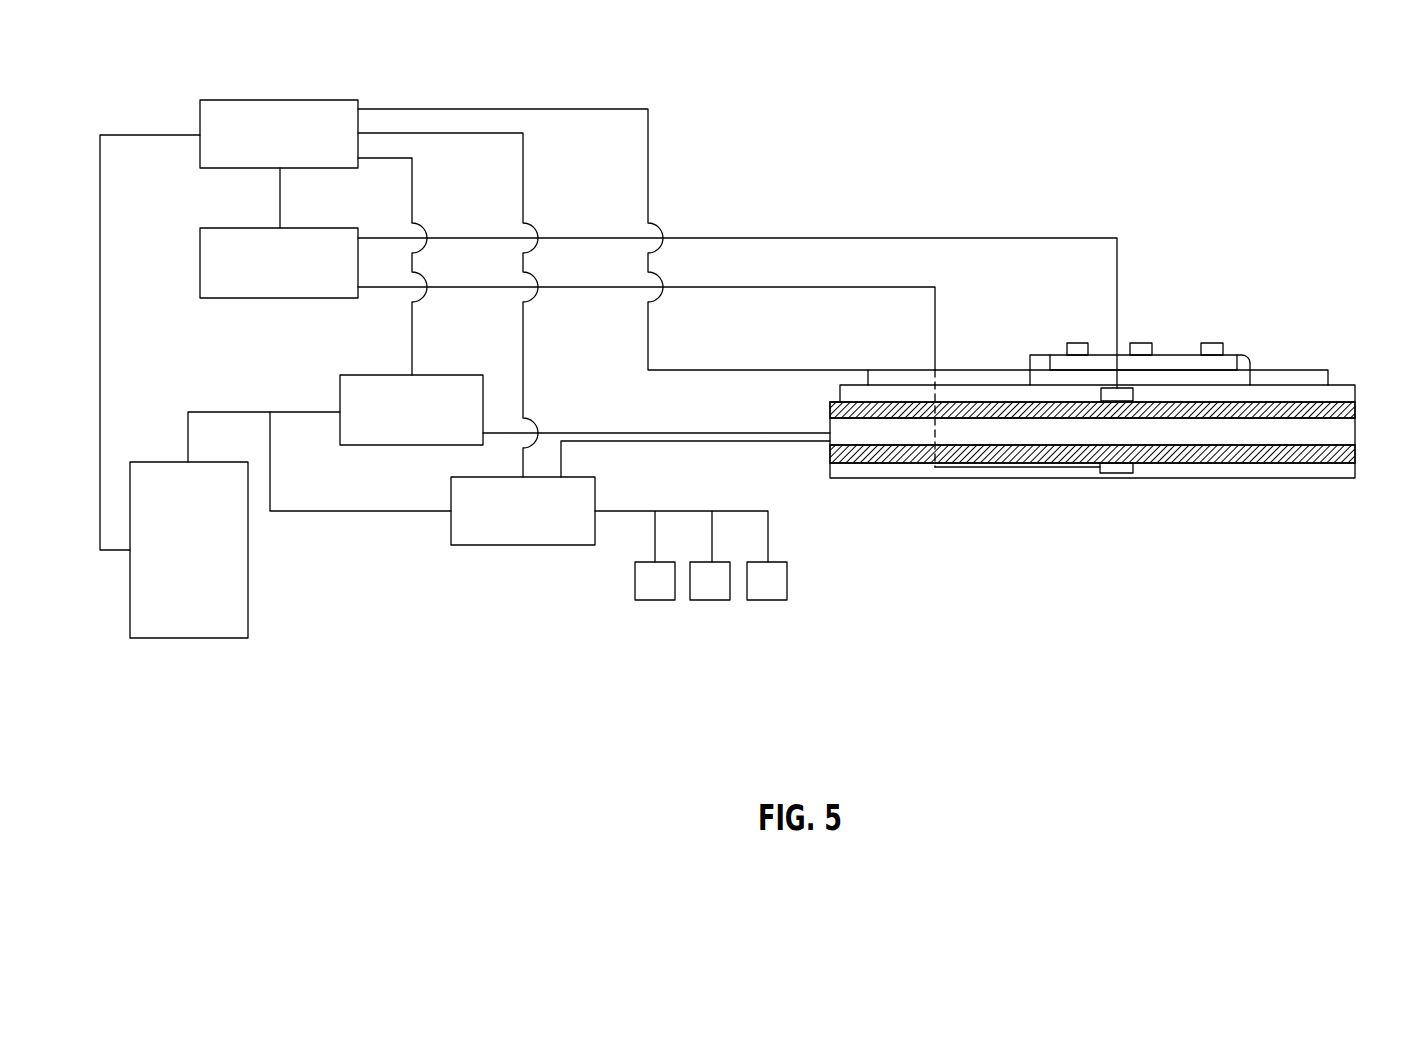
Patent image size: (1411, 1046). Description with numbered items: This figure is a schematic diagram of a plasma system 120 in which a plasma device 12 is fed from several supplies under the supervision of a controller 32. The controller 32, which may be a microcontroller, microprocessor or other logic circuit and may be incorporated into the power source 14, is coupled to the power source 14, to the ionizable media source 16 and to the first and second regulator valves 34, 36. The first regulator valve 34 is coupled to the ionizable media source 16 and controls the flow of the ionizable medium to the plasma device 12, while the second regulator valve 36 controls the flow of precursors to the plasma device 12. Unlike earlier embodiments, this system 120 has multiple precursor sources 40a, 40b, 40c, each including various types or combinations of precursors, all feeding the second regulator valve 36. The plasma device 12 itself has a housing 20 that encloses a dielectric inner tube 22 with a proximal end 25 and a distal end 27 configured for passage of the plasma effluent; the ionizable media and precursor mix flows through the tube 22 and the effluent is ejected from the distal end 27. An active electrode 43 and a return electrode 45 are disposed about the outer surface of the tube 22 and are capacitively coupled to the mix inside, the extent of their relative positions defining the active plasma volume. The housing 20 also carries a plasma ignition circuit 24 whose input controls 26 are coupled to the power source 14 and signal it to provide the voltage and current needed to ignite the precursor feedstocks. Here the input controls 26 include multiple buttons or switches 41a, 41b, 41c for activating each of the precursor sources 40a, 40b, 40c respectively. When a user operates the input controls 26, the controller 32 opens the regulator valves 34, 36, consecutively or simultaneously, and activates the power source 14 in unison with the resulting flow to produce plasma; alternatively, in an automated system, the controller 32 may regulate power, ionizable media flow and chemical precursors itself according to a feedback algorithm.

The plasma system 120 is at (992, 180).
The controller 32 is at (223, 100).
The power source 14 is at (223, 228).
The ionizable media source 16 is at (248, 553).
The first regulator valve 34 is at (372, 448).
The second regulator valve 36 is at (485, 548).
The precursor source 40a is at (655, 601).
The precursor source 40b is at (712, 601).
The precursor source 40c is at (769, 601).
The plasma device 12 is at (940, 497).
The housing 20 is at (1077, 480).
The dielectric inner tube 22 is at (1335, 458).
The plasma ignition circuit 24 is at (1264, 340).
The proximal end 25 is at (907, 425).
The input controls 26 is at (1040, 344).
The distal end 27 is at (1232, 433).
The switch 41a is at (1074, 343).
The switch 41b is at (1142, 343).
The switch 41c is at (1214, 343).
The active electrode 43 is at (1117, 475).
The return electrode 45 is at (1122, 388).